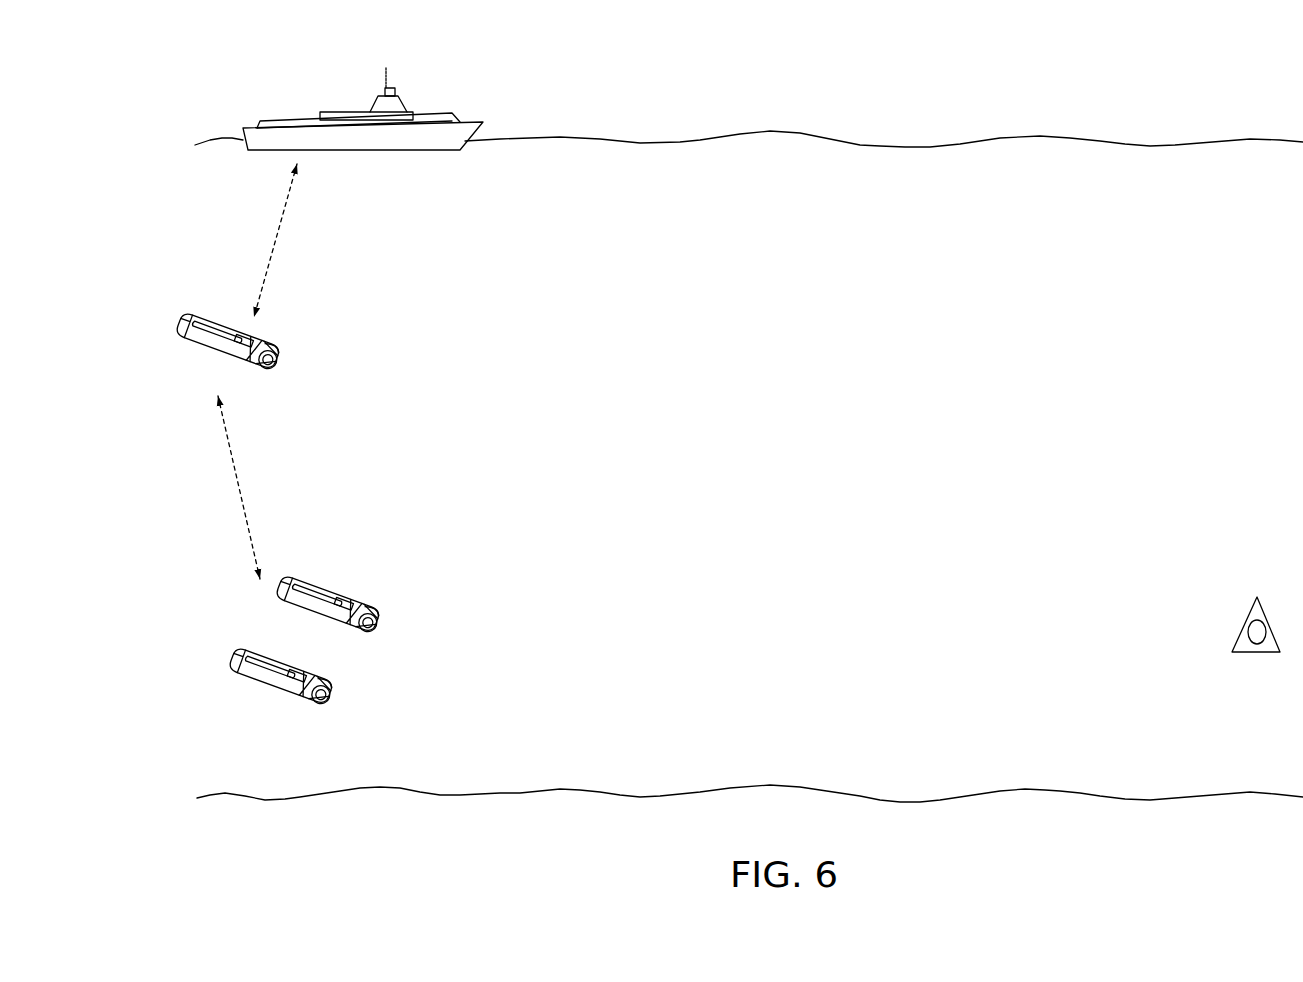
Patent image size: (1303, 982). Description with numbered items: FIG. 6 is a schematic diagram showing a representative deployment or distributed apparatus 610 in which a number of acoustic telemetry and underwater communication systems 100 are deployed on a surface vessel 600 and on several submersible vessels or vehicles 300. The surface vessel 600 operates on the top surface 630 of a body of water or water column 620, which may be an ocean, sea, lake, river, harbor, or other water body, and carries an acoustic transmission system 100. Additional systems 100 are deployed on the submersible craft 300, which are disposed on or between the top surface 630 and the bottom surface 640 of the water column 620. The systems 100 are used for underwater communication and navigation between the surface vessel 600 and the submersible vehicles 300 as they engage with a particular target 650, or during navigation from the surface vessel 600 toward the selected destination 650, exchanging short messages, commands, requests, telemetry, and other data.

The acoustic telemetry and underwater communication system 100 is at (313, 166).
The submersible vessel or vehicle 300 is at (266, 386).
The surface vessel 600 is at (459, 91).
The distributed apparatus 610 is at (1203, 114).
The body of water 620 is at (747, 405).
The top surface 630 is at (226, 139).
The bottom surface 640 is at (1025, 789).
The target 650 is at (1247, 618).